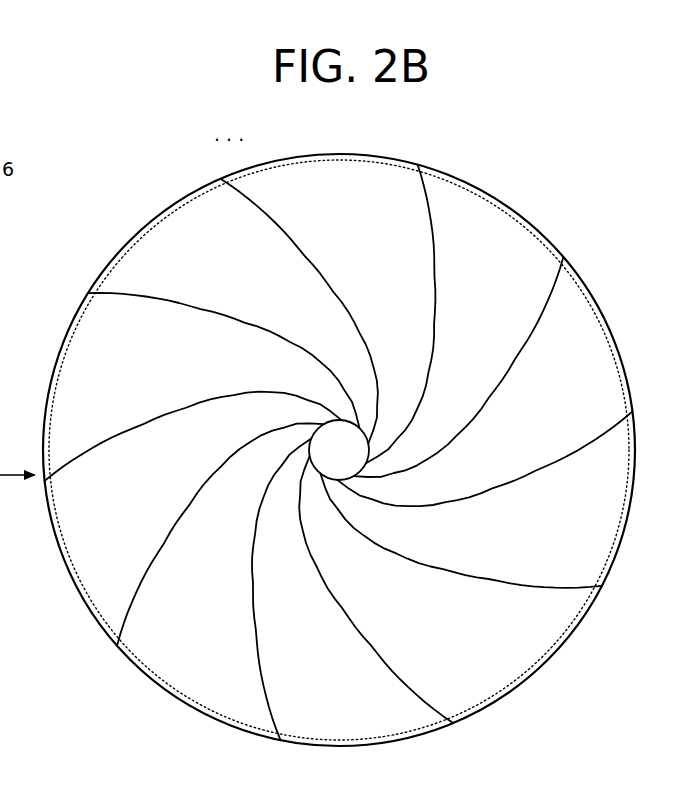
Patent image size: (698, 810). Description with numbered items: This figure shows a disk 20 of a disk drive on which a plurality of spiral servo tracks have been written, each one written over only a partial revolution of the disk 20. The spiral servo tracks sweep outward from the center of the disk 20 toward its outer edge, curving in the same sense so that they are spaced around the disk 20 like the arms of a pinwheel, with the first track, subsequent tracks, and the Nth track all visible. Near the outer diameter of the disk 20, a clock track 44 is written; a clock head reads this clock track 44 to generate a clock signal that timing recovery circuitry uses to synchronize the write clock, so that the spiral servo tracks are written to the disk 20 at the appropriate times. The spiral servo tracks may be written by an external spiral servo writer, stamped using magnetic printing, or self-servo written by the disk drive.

The disk 20 is at (531, 203).
The clock track 44 is at (612, 530).